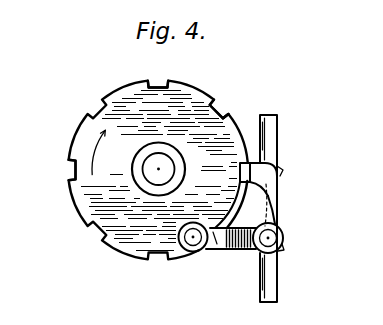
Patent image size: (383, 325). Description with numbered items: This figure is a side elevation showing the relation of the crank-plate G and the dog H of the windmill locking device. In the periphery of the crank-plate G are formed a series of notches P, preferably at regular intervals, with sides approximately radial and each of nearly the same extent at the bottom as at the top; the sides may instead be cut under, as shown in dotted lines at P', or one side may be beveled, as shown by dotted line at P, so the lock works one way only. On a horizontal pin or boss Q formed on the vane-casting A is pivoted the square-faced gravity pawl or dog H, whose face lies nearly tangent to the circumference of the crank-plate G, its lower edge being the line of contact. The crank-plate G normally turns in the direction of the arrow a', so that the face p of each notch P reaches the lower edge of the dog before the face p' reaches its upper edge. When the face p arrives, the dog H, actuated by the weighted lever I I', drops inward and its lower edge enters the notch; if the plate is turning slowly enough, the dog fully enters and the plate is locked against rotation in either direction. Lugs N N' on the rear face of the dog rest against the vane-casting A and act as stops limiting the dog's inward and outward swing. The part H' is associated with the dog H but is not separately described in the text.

The crank-plate G is at (158, 170).
The notches P is at (158, 76).
The notch with cut-under sides P' is at (58, 170).
The face of notch p' is at (220, 101).
The face of notch p is at (233, 110).
The arrow a' is at (105, 152).
The vane-casting A is at (276, 276).
The bracket flange H' is at (271, 170).
The lug N' is at (290, 172).
The gravity pawl or dog H is at (260, 205).
The weighted lever I is at (231, 251).
The weight of lever I' is at (193, 256).
The horizontal pin or boss Q is at (282, 231).
The lug N is at (292, 244).